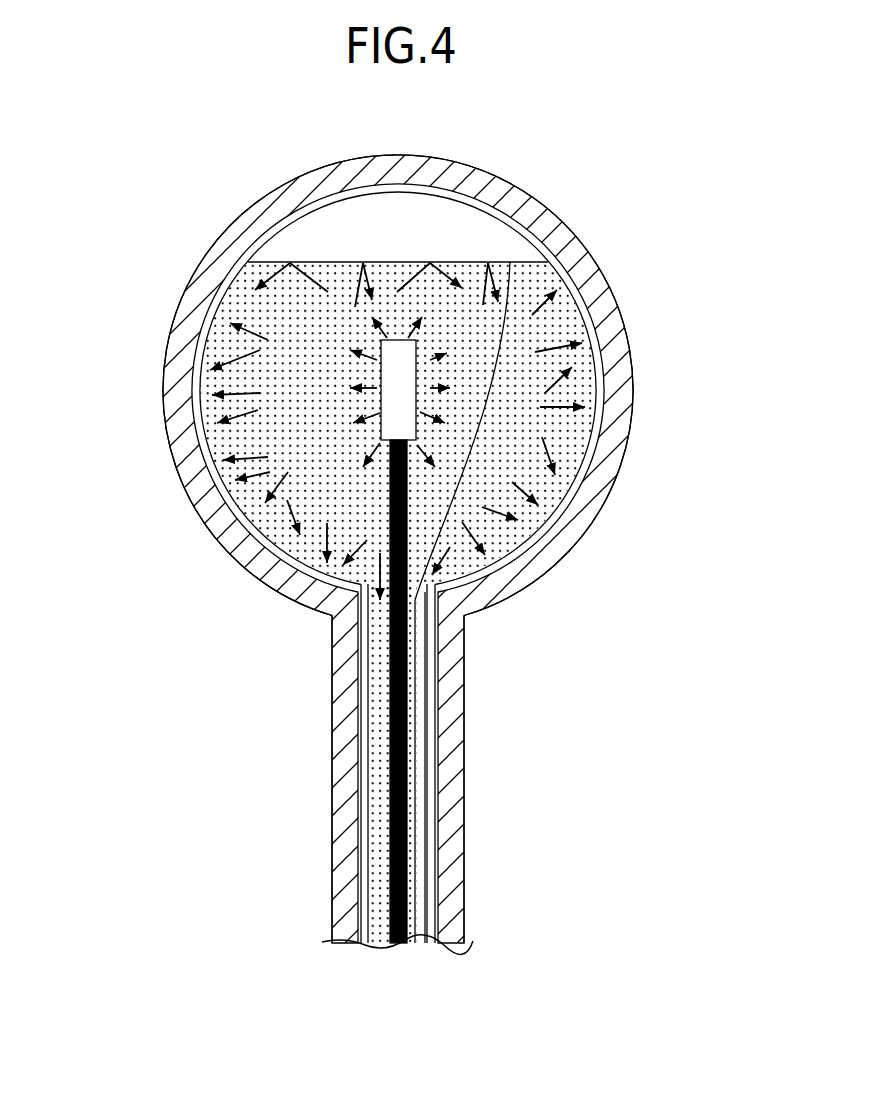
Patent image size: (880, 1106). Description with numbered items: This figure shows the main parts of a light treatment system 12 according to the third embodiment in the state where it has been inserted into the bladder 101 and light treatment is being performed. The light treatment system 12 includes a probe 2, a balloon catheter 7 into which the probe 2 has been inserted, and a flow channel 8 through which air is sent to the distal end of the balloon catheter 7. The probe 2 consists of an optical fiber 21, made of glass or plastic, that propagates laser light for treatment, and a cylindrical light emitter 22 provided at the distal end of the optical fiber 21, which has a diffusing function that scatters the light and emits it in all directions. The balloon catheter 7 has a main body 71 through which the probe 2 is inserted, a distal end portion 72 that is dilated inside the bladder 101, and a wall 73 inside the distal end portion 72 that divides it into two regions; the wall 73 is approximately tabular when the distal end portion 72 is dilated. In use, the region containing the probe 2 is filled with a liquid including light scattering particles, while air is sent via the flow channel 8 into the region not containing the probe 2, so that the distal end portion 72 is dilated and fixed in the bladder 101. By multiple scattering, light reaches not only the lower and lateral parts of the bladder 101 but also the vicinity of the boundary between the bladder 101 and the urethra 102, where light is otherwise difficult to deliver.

The probe 2 is at (410, 703).
The optical fiber 21 is at (422, 665).
The light emitter 22 is at (380, 428).
The balloon catheter 7 is at (202, 350).
The main body 71 is at (365, 708).
The distal end portion 72 is at (217, 472).
The wall 73 is at (305, 262).
The flow channel 8 is at (485, 425).
The light treatment system 12 is at (520, 228).
The bladder 101 is at (623, 358).
The urethra 102 is at (440, 748).